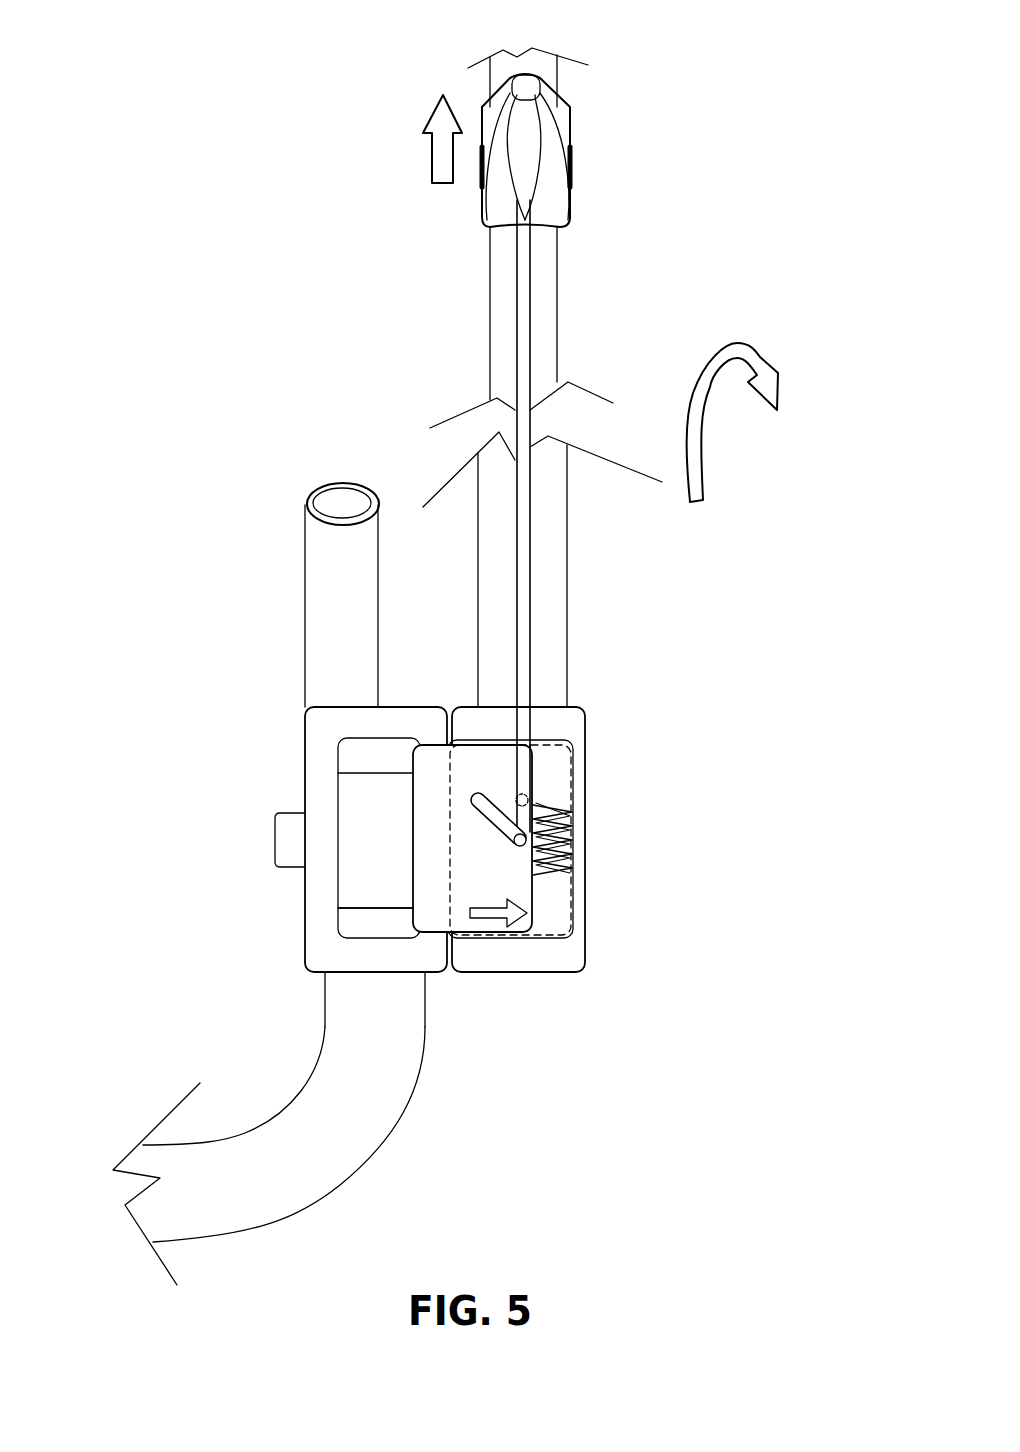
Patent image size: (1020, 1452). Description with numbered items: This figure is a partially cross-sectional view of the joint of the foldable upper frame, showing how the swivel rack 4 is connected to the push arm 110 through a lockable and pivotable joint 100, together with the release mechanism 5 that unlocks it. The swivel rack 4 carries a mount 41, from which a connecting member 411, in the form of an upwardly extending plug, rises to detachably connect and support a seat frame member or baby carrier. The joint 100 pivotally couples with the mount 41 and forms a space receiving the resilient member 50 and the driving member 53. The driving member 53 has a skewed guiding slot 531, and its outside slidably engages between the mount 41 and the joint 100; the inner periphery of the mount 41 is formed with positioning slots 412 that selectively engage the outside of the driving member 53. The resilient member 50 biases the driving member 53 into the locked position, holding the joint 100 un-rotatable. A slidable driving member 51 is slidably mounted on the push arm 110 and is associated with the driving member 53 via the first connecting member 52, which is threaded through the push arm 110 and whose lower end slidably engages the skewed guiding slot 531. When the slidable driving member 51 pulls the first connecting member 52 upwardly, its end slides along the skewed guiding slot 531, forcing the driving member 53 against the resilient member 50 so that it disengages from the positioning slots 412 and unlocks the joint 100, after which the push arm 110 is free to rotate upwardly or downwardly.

The swivel rack 4 is at (383, 1113).
The release mechanism 5 is at (670, 148).
The mount 41 is at (312, 770).
The connecting member 411 is at (317, 537).
The positioning slots 412 is at (363, 924).
The resilient member 50 is at (568, 872).
The slidable driving member 51 is at (490, 203).
The first connecting member 52 is at (520, 423).
The driving member 53 is at (424, 758).
The skewed guiding slot 531 is at (482, 800).
The joint 100 is at (570, 725).
The push arm 110 is at (495, 70).